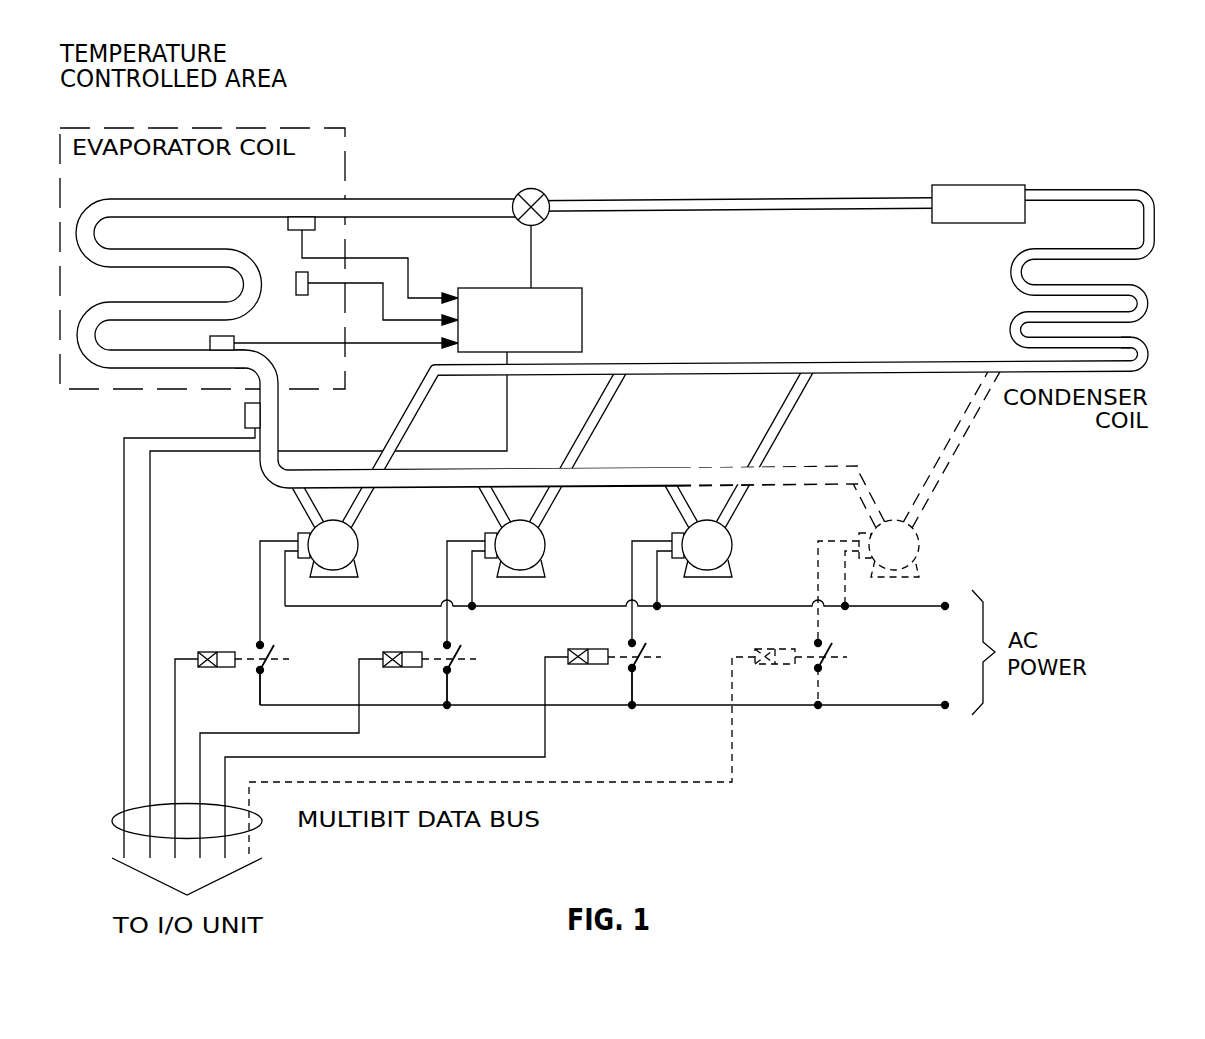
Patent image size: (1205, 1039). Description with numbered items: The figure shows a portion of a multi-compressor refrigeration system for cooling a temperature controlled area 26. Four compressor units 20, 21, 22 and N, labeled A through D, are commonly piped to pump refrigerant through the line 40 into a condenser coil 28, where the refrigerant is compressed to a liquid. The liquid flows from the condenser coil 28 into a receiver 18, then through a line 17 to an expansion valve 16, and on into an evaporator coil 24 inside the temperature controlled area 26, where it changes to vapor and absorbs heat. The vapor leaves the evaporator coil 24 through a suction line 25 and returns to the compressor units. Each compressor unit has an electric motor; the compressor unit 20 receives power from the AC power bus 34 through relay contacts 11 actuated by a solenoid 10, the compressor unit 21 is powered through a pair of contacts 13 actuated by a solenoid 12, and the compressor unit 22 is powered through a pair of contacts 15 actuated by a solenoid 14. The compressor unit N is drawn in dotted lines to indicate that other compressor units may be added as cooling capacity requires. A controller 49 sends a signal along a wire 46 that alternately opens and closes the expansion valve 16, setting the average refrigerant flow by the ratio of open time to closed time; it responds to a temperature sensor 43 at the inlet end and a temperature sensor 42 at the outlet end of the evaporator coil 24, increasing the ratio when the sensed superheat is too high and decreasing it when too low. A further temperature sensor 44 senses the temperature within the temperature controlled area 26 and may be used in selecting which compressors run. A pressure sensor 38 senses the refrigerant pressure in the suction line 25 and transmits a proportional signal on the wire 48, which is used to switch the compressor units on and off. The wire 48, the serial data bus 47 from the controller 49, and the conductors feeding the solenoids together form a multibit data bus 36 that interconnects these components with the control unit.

The solenoid 10 is at (228, 651).
The relay contacts 11 is at (272, 665).
The solenoid 12 is at (410, 651).
The pair of contacts 13 is at (458, 665).
The solenoid 14 is at (594, 648).
The pair of contacts 15 is at (643, 665).
The expansion valve 16 is at (522, 190).
The line 17 is at (620, 200).
The receiver 18 is at (943, 185).
The compressor unit 20 is at (358, 536).
The compressor unit 21 is at (545, 534).
The compressor unit 22 is at (732, 534).
The evaporator coil 24 is at (245, 199).
The suction line 25 is at (282, 412).
The temperature controlled area 26 is at (245, 128).
The condenser coil 28 is at (1122, 277).
The AC power bus 34 is at (925, 608).
The multibit data bus 36 is at (254, 830).
The pressure sensor 38 is at (245, 410).
The line 40 is at (688, 366).
The temperature sensor 42 is at (212, 340).
The temperature sensor 43 is at (288, 226).
The temperature sensor 44 is at (302, 295).
The wire 46 is at (531, 256).
The serial data bus 47 is at (508, 408).
The wire 48 is at (124, 455).
The controller 49 is at (520, 320).
The compressor unit N is at (919, 533).